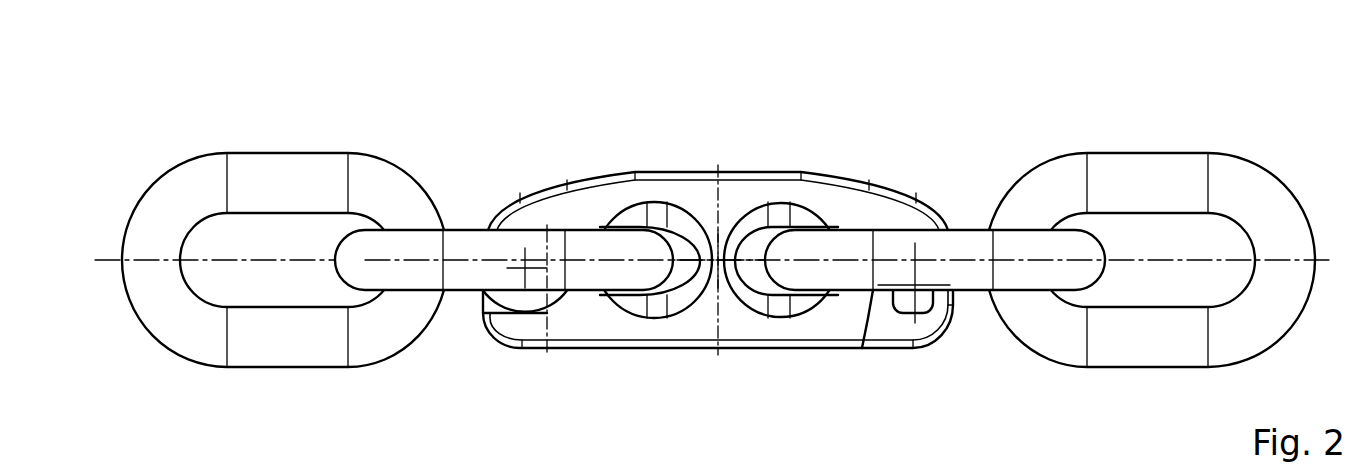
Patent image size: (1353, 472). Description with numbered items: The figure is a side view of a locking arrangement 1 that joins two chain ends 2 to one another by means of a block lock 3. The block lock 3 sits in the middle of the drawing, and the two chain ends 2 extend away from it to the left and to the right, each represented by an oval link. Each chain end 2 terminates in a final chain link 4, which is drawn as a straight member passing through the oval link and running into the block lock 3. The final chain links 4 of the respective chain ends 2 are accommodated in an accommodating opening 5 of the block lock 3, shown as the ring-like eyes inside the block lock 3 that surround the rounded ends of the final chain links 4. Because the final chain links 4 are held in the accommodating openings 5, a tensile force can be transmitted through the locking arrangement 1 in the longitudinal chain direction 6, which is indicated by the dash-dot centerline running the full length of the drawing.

The locking arrangement 1 is at (947, 110).
The chain ends 2 is at (382, 137).
The block lock 3 is at (687, 172).
The final chain links 4 is at (488, 248).
The accommodating opening 5 is at (682, 277).
The longitudinal chain direction 6 is at (1318, 262).